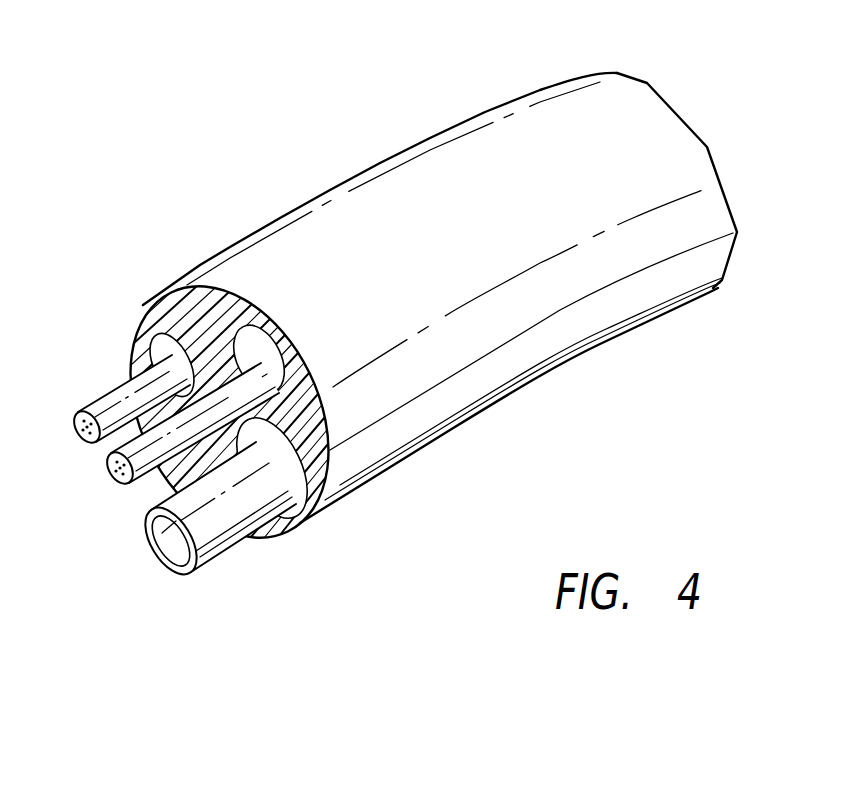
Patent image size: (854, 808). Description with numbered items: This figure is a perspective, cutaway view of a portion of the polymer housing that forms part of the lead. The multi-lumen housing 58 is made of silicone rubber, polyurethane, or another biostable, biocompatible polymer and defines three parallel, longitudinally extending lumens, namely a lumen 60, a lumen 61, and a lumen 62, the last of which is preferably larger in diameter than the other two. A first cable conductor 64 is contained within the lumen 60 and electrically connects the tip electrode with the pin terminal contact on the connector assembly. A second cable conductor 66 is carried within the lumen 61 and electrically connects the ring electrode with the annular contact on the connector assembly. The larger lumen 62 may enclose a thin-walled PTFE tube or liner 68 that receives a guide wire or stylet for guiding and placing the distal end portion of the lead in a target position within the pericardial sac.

The multi-lumen housing 58 is at (410, 143).
The lumen 60 is at (131, 358).
The lumen 61 is at (216, 355).
The lumen 62 is at (280, 508).
The first cable conductor 64 is at (93, 404).
The second cable conductor 66 is at (212, 348).
The PTFE tube or liner 68 is at (208, 560).